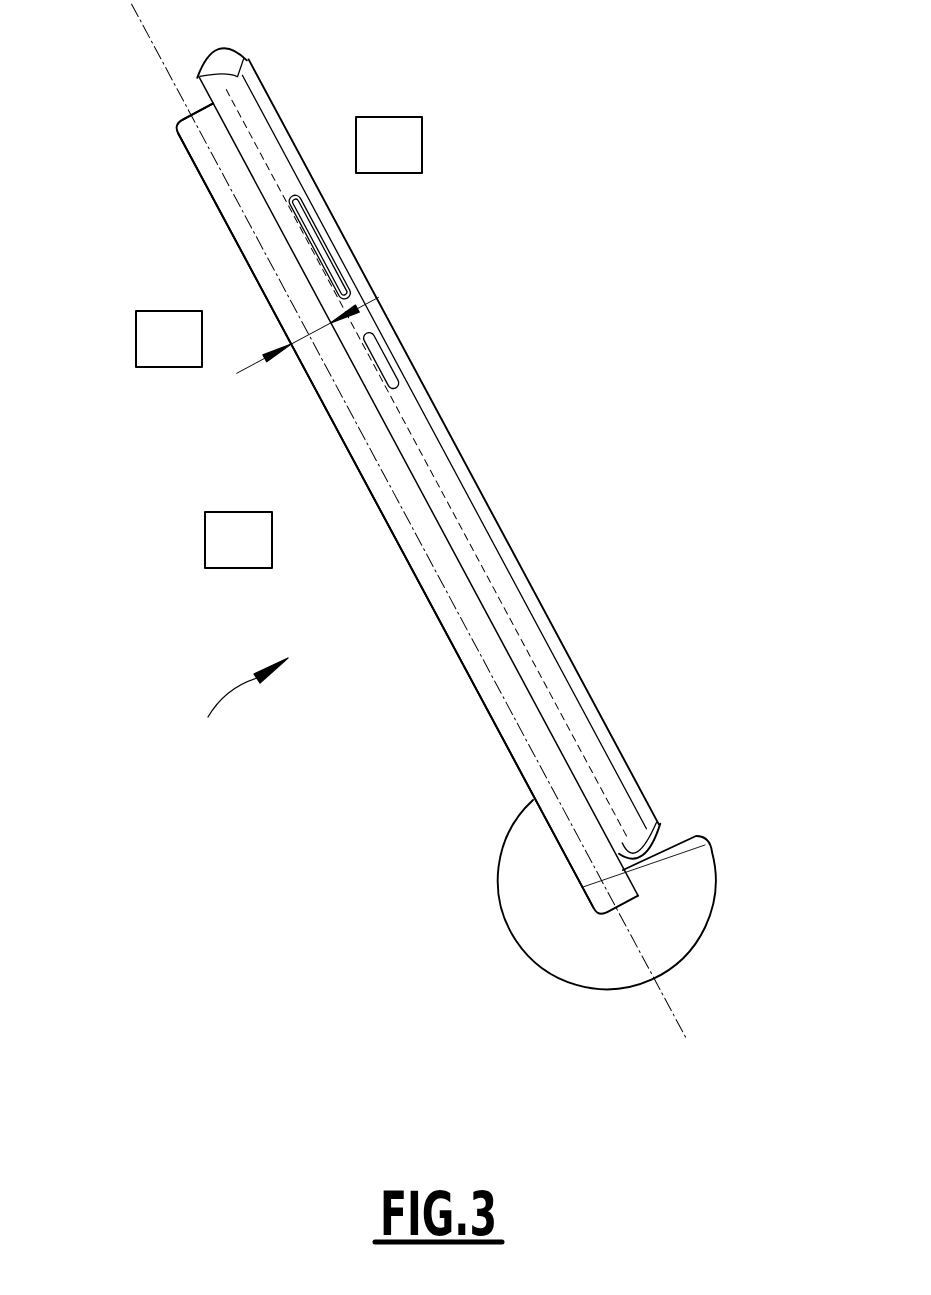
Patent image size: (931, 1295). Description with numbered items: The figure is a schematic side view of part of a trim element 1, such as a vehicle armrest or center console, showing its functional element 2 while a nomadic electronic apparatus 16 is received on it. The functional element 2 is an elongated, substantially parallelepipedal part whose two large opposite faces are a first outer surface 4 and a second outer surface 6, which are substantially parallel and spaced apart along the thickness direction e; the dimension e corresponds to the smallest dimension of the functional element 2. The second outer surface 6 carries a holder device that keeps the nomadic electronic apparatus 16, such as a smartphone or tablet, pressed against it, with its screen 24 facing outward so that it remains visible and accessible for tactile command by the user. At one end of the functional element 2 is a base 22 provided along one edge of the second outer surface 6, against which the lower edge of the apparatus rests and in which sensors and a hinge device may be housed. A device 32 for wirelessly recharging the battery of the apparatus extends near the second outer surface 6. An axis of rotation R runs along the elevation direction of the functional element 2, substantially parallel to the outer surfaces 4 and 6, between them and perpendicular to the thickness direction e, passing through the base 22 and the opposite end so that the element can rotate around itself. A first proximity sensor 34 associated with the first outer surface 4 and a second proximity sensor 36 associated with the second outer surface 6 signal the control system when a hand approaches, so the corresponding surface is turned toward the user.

The trim element 1 is at (242, 696).
The functional element 2 is at (395, 515).
The first outer surface 4 is at (325, 405).
The second outer surface 6 is at (253, 193).
The nomadic electronic apparatus 16 is at (257, 133).
The base 22 is at (685, 897).
The screen 24 is at (407, 350).
The wireless recharging device 32 is at (355, 470).
The first proximity sensor 34 is at (238, 252).
The second proximity sensor 36 is at (280, 230).
The axis of rotation R is at (140, 35).
The thickness direction e is at (295, 340).